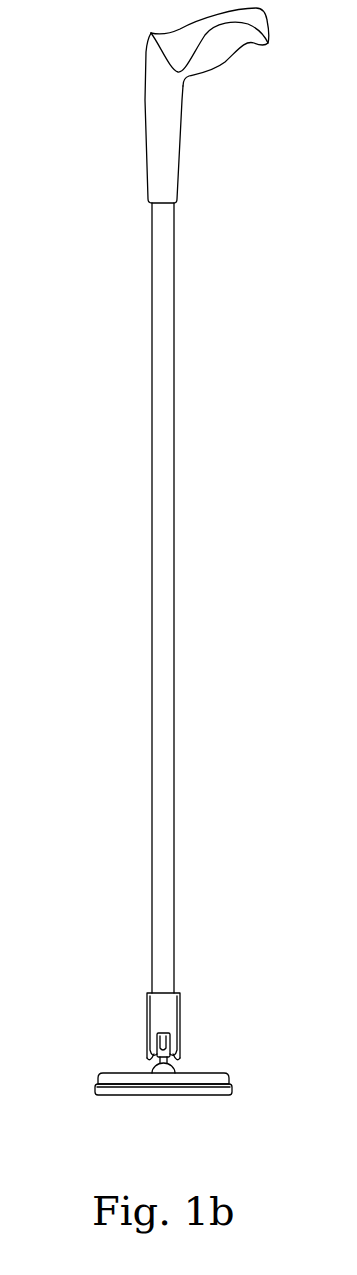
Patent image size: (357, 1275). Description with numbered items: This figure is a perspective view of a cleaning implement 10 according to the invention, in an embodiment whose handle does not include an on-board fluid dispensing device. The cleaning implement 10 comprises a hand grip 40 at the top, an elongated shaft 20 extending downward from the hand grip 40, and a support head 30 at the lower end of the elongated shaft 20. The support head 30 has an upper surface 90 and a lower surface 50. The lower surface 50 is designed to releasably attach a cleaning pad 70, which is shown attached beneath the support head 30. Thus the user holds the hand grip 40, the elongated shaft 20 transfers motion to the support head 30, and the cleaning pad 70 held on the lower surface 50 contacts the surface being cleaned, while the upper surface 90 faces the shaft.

The cleaning implement 10 is at (112, 566).
The elongated shaft 20 is at (175, 678).
The support head 30 is at (208, 1074).
The hand grip 40 is at (222, 64).
The lower surface 50 is at (125, 1095).
The cleaning pad 70 is at (188, 1094).
The upper surface 90 is at (120, 1073).